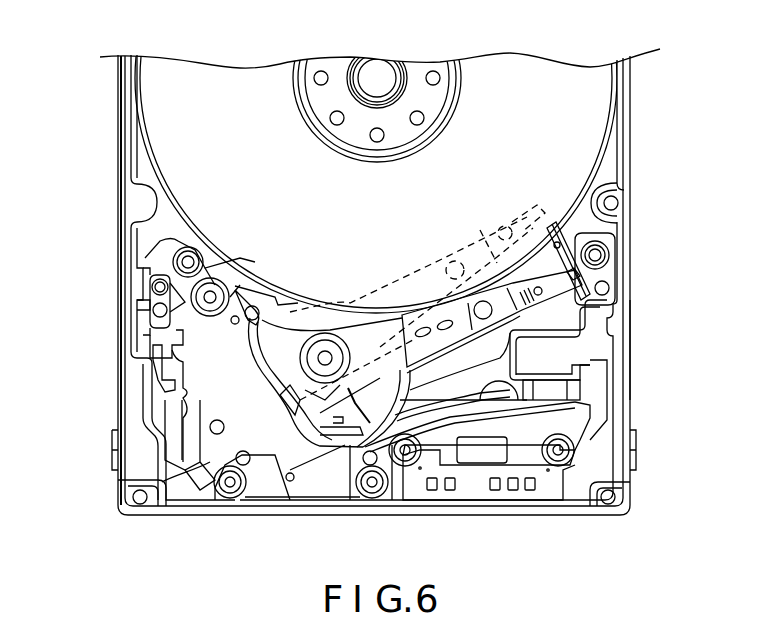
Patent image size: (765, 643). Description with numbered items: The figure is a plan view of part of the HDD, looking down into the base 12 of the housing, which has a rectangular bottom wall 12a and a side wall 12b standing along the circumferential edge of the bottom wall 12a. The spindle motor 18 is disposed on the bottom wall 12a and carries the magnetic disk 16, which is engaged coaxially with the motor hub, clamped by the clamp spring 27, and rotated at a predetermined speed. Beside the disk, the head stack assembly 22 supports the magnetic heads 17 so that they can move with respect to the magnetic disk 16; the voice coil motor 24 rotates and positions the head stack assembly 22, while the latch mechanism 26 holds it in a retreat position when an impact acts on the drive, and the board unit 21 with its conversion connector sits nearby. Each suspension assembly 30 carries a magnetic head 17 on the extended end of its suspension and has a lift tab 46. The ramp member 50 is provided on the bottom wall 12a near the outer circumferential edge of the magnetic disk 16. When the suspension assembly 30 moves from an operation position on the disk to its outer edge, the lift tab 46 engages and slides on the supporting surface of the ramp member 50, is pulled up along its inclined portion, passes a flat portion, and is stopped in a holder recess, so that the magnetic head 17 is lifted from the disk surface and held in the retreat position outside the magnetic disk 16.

The base 12 is at (114, 243).
The bottom wall 12a is at (600, 378).
The side wall 12b is at (632, 345).
The magnetic disk 16 is at (160, 137).
The magnetic head 17 is at (603, 256).
The spindle motor 18 is at (385, 80).
The board unit 21 is at (527, 455).
The head stack assembly 22 is at (408, 326).
The voice coil motor 24 is at (312, 455).
The latch mechanism 26 is at (156, 322).
The clamp spring 27 is at (300, 100).
The suspension assembly 30 is at (448, 236).
The lift tab 46 is at (552, 212).
The ramp member 50 is at (612, 205).